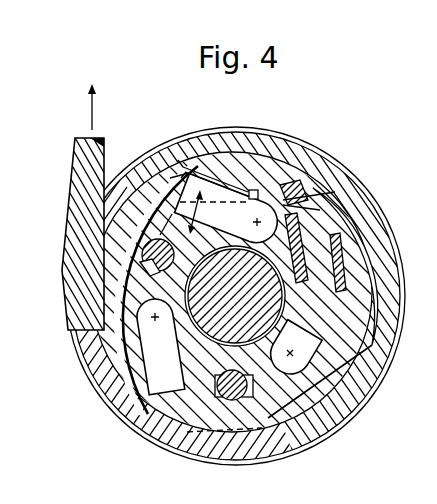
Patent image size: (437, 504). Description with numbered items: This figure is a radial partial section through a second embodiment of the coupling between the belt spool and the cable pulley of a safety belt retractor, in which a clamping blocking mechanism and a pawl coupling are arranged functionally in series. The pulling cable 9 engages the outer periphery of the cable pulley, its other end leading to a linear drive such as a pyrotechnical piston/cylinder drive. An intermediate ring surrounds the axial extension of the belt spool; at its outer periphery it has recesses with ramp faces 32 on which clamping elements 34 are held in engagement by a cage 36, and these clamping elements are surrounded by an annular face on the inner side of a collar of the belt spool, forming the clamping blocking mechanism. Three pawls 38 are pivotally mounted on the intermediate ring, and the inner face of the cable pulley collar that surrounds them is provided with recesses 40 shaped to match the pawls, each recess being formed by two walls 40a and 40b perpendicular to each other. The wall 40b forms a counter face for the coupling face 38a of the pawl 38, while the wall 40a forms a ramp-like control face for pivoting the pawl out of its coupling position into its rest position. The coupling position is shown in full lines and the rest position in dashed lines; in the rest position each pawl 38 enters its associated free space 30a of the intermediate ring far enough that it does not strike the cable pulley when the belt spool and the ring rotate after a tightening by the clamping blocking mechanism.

The pulling cable 9 is at (80, 168).
The free space 30a is at (175, 213).
The ramp faces 32 is at (140, 290).
The clamping elements 34 is at (238, 400).
The cage 36 is at (266, 418).
The pawls 38 is at (250, 208).
The coupling face 38a is at (178, 192).
The recesses 40 is at (190, 170).
The wall 40a is at (250, 196).
The wall 40b is at (187, 162).